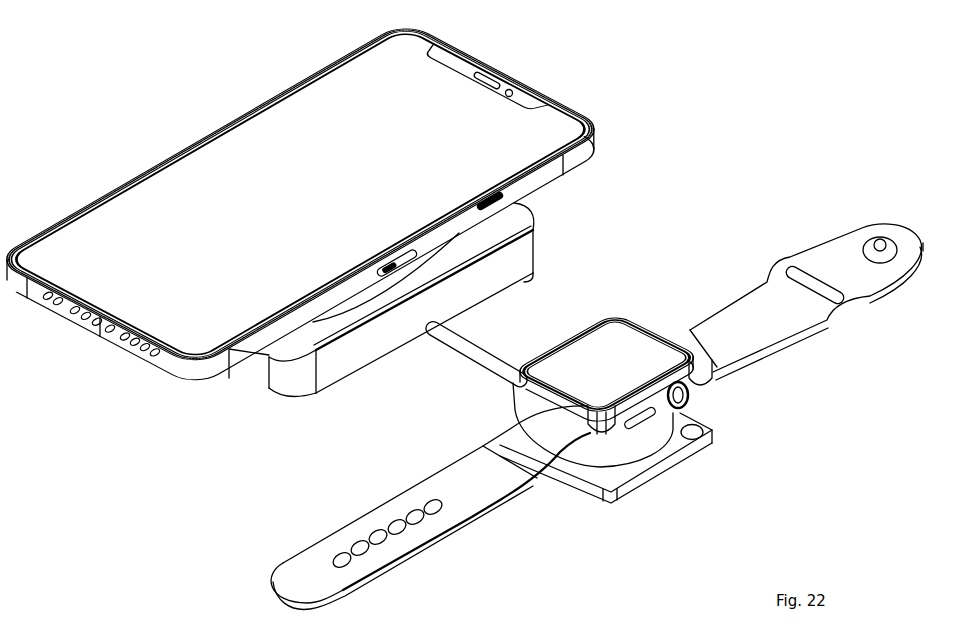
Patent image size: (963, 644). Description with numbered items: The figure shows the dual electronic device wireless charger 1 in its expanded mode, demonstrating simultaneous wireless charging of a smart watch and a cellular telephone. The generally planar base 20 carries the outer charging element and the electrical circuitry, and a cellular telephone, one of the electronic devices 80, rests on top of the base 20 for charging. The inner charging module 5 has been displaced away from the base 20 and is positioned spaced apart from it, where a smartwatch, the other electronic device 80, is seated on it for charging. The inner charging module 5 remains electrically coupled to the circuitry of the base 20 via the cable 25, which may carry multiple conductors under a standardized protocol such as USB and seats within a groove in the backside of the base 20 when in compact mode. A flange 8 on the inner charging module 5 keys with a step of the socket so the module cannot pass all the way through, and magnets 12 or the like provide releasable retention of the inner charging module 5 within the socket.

The dual electronic device wireless charger 1 is at (103, 157).
The base 20 is at (217, 118).
The electronic device 80 is at (362, 90).
The cable 25 is at (477, 353).
The inner charging module 5 is at (646, 473).
The flange 8 is at (612, 475).
The magnets 12 is at (701, 426).